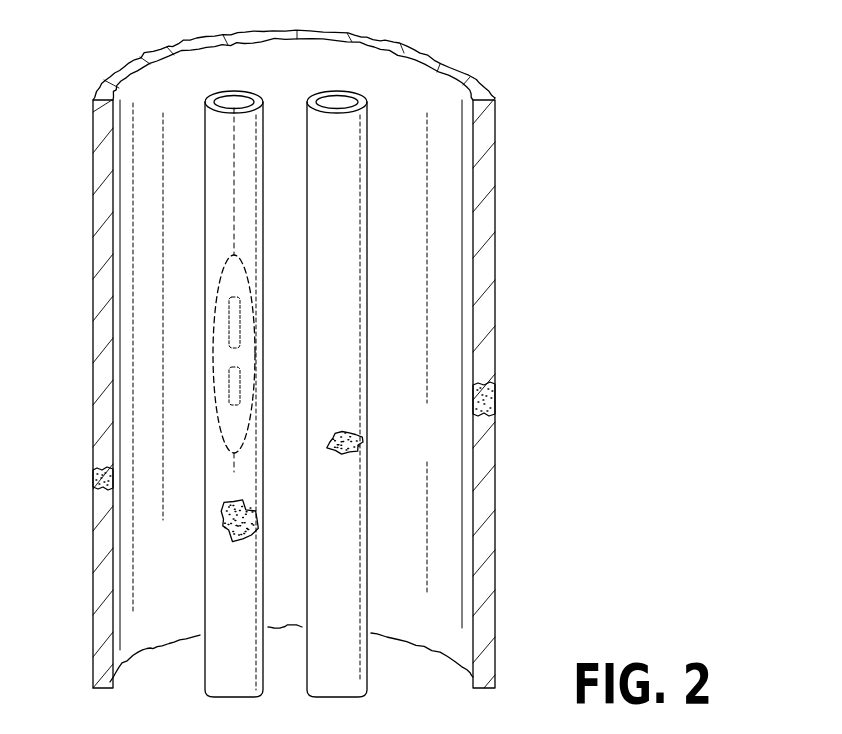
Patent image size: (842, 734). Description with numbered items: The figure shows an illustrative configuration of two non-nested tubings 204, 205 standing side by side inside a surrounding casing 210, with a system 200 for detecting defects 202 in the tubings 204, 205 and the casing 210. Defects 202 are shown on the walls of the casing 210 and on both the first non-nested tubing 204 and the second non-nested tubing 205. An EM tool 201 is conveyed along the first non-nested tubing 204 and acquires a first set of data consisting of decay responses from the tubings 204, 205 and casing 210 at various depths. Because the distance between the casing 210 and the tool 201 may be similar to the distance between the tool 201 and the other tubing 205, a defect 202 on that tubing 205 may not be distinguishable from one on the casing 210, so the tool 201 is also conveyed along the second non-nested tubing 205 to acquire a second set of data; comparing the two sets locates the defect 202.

The system 200 is at (482, 59).
The EM tool 201 is at (213, 318).
The defects 202 is at (93, 478).
The first non-nested tubing 204 is at (203, 668).
The second non-nested tubing 205 is at (368, 668).
The casing 210 is at (93, 253).